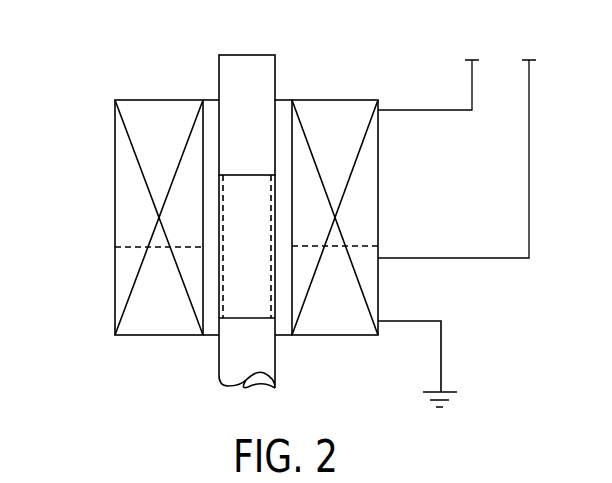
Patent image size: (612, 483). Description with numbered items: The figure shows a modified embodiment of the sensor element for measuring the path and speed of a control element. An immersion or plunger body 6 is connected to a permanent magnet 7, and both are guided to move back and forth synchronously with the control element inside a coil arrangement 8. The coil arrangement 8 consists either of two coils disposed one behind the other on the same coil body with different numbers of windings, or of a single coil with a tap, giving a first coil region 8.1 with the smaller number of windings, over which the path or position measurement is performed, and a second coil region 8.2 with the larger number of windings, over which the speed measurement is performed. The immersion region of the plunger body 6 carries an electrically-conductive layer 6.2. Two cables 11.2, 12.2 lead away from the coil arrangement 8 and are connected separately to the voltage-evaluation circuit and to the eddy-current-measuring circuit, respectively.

The coil arrangement 8 is at (208, 179).
The first coil region 8.1 is at (84, 100).
The second coil region 8.2 is at (84, 250).
The permanent magnet 7 is at (276, 75).
The immersion body 6 is at (219, 350).
The electrically-conductive layer 6.2 is at (276, 312).
The cable 11.2 is at (446, 109).
The cable 12.2 is at (496, 257).